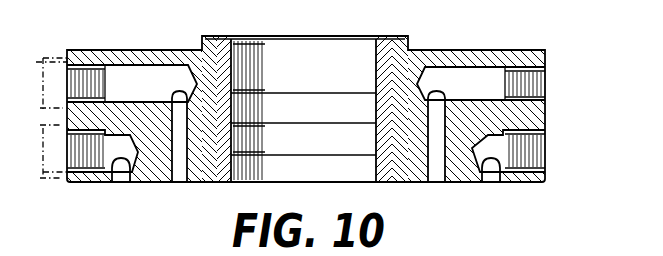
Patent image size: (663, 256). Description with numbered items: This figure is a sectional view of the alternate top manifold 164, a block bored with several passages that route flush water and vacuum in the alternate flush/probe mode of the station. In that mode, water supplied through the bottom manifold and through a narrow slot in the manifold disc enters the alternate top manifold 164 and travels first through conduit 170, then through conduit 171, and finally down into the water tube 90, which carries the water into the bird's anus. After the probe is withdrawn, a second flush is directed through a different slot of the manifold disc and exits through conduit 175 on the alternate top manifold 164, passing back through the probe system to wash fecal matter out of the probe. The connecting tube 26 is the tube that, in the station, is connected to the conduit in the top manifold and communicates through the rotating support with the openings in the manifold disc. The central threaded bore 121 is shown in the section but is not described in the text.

The alternate top manifold 164 is at (462, 48).
The central threaded bore 121 is at (312, 57).
The conduit 171 is at (145, 80).
The conduit 170 is at (176, 170).
The conduit 175 is at (117, 150).
The water tube 90 is at (43, 58).
The connecting tube 26 is at (48, 178).